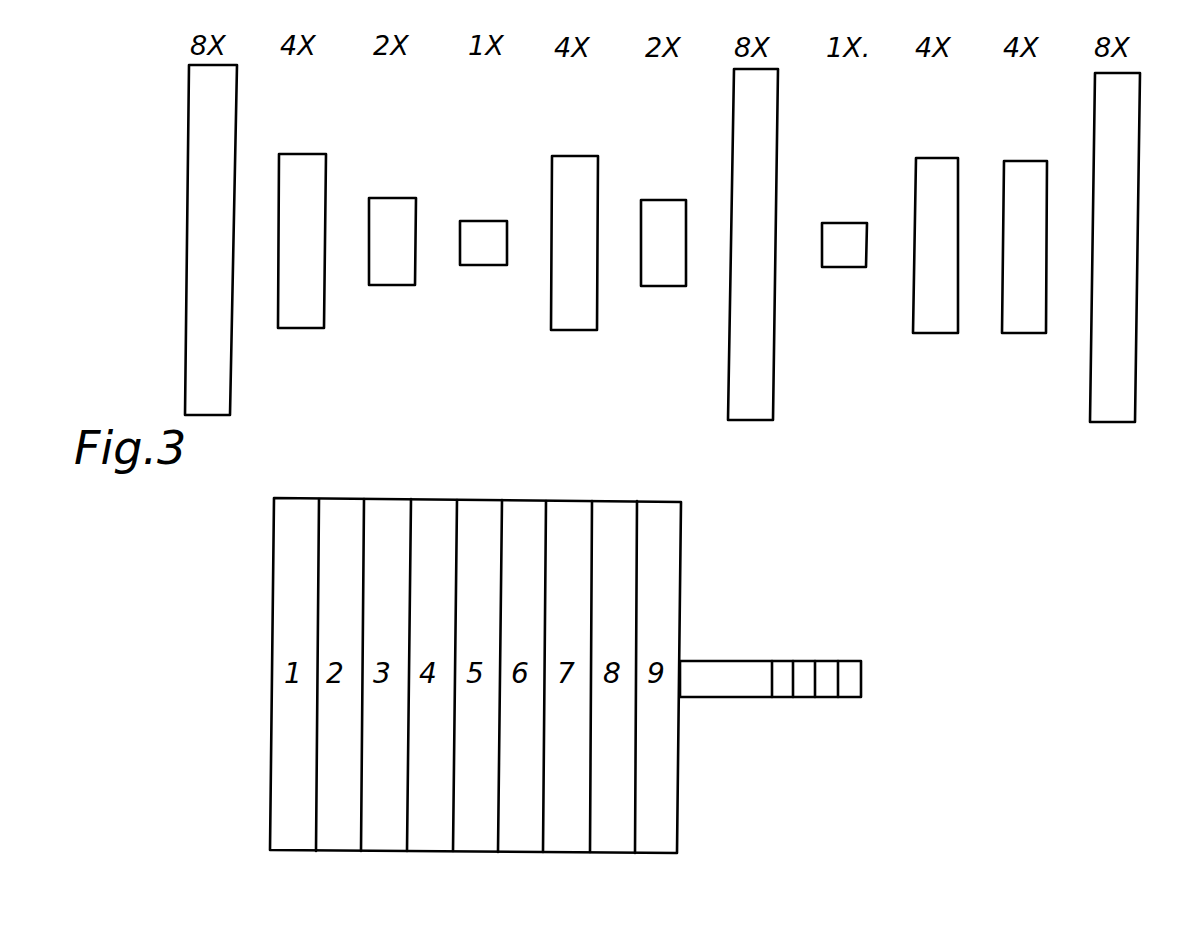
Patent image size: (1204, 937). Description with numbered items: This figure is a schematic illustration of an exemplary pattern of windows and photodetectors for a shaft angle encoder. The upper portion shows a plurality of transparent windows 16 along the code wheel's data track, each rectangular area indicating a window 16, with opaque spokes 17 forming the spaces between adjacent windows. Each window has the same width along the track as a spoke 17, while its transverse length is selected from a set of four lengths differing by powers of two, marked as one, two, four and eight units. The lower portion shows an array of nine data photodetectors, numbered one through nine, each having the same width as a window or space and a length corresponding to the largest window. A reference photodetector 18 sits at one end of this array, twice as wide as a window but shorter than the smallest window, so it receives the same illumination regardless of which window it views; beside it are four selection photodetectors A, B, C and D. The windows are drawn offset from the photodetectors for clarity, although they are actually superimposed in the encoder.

The transparent window 16 is at (1122, 231).
The opaque spoke 17 is at (886, 260).
The reference photodetector 18 is at (748, 661).